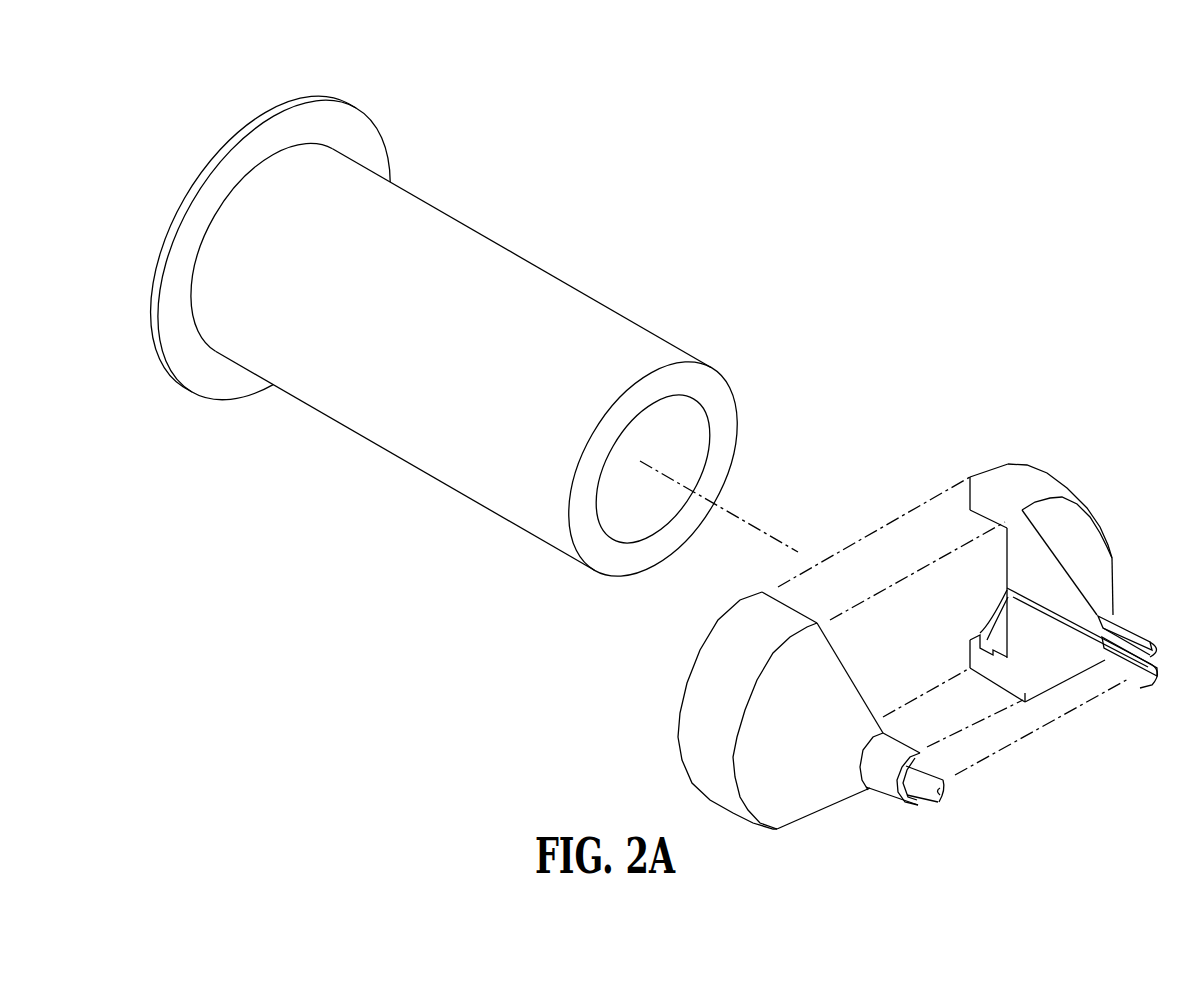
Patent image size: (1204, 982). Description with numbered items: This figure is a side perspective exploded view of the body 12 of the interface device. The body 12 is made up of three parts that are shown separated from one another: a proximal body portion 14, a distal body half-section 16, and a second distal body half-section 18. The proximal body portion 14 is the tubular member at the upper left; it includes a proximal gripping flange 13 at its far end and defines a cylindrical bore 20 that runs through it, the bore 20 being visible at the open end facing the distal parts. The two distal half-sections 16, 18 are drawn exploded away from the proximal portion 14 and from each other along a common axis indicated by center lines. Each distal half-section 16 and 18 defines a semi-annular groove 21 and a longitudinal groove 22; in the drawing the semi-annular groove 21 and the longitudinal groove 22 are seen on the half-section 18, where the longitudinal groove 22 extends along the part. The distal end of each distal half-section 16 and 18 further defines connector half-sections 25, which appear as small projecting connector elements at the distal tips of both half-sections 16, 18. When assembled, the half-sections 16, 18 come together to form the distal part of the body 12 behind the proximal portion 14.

The body 12 is at (743, 226).
The proximal gripping flange 13 is at (283, 133).
The proximal body portion 14 is at (578, 300).
The distal body half-section 16 is at (795, 805).
The distal body half-section 18 is at (1078, 527).
The cylindrical bore 20 is at (695, 458).
The semi-annular groove 21 is at (990, 632).
The longitudinal groove 22 is at (1057, 612).
The connector half-sections 25 is at (1132, 627).